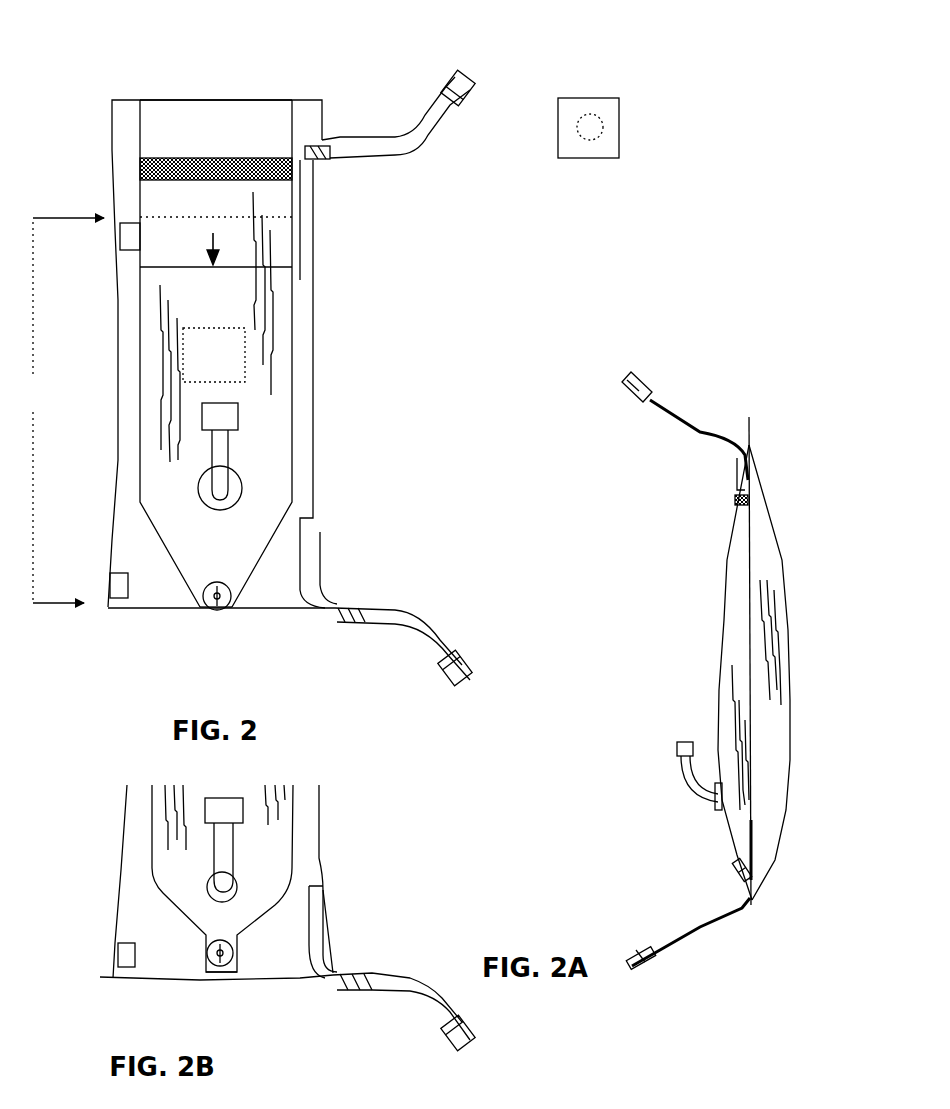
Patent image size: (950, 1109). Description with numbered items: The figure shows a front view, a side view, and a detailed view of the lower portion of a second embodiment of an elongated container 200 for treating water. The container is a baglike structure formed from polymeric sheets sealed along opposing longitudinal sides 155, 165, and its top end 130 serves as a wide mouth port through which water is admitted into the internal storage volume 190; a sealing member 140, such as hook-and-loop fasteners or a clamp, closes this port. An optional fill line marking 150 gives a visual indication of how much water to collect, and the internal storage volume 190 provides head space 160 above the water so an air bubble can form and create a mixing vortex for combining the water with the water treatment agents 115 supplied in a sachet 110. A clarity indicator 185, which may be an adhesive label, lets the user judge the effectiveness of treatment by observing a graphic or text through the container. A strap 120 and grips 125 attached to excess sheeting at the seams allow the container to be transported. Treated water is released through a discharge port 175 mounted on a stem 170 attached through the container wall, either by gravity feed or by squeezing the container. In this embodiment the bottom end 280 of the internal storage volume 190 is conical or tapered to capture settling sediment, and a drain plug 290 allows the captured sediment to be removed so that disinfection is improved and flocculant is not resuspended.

In FIG. 2, the elongated container 200 is at (88, 78).
In FIG. 2, the top end 130 is at (181, 99).
In FIG. 2, the strap 120 is at (408, 130).
In FIG. 2B, the strap 120 is at (442, 1010).
In FIG. 2A, the strap 120 is at (688, 415).
In FIG. 2, the water treatment agents 115 is at (588, 127).
In FIG. 2, the sachet 110 is at (588, 158).
In FIG. 2, the sealing member 140 is at (139, 182).
In FIG. 2, the grip 125 is at (125, 232).
In FIG. 2B, the grip 125 is at (122, 950).
In FIG. 2, the head space 160 is at (278, 225).
In FIG. 2, the fill line marking 150 is at (213, 270).
In FIG. 2A, the fill line marking 150 is at (755, 565).
In FIG. 2, the clarity indicator 185 is at (183, 345).
In FIG. 2, the longitudinal side 155 is at (133, 380).
In FIG. 2, the internal storage volume 190 is at (59, 410).
In FIG. 2, the discharge port 175 is at (210, 418).
In FIG. 2B, the discharge port 175 is at (225, 815).
In FIG. 2A, the discharge port 175 is at (680, 746).
In FIG. 2, the longitudinal side 165 is at (303, 430).
In FIG. 2B, the longitudinal side 165 is at (320, 788).
In FIG. 2, the stem 170 is at (240, 488).
In FIG. 2B, the stem 170 is at (228, 863).
In FIG. 2A, the stem 170 is at (700, 805).
In FIG. 2, the drain plug 290 is at (218, 610).
In FIG. 2B, the drain plug 290 is at (220, 966).
In FIG. 2A, the drain plug 290 is at (740, 878).
In FIG. 2, the bottom end 280 is at (255, 580).
In FIG. 2B, the bottom end 280 is at (240, 952).